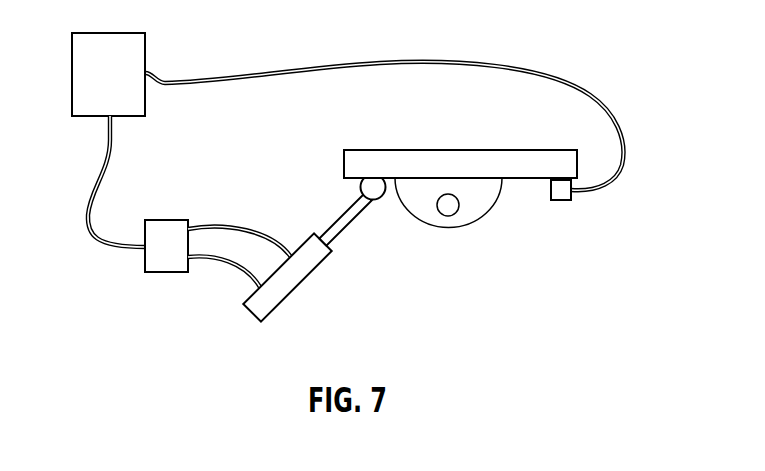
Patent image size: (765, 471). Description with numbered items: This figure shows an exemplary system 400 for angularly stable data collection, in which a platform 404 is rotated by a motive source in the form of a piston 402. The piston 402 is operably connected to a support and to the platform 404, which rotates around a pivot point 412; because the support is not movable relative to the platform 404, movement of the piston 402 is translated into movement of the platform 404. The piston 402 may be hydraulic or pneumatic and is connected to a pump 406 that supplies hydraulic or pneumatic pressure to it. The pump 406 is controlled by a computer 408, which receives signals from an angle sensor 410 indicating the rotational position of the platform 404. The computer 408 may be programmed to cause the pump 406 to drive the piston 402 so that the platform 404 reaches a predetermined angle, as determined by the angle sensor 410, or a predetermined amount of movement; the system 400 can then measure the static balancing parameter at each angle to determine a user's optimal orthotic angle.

The system for angularly stabile data collection 400 is at (527, 38).
The piston 402 is at (302, 287).
The platform 404 is at (378, 150).
The pump 406 is at (165, 272).
The computer 408 is at (108, 33).
The angle sensor 410 is at (560, 200).
The pivot point 412 is at (448, 216).